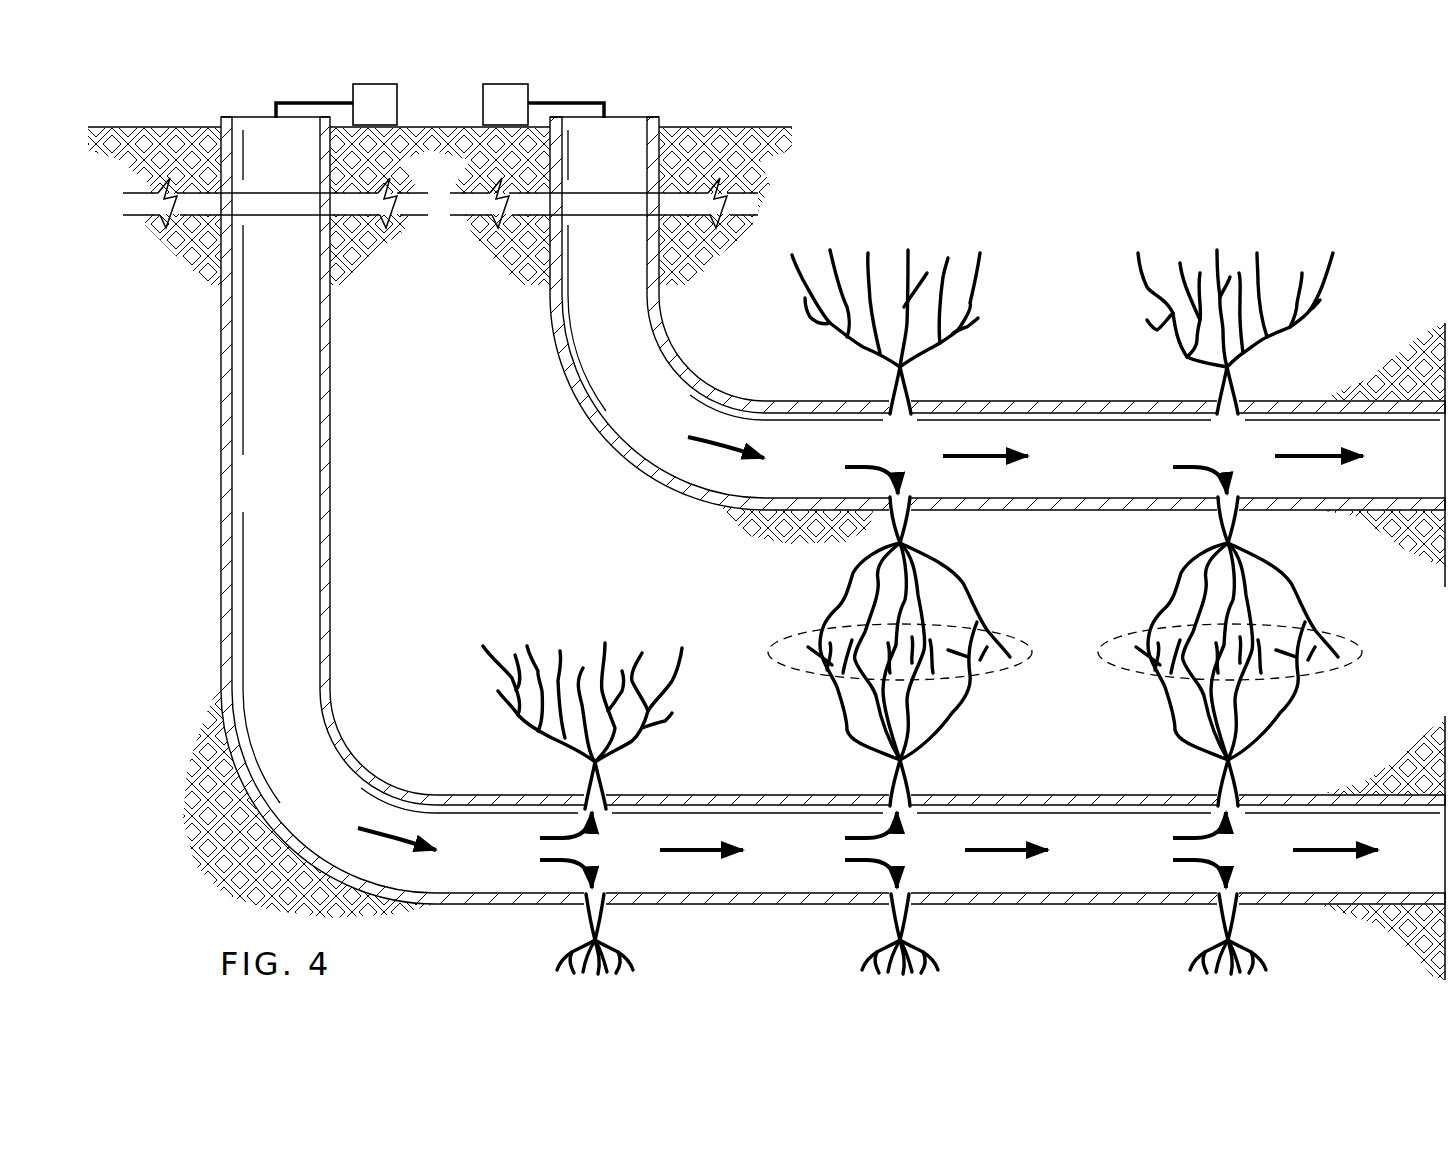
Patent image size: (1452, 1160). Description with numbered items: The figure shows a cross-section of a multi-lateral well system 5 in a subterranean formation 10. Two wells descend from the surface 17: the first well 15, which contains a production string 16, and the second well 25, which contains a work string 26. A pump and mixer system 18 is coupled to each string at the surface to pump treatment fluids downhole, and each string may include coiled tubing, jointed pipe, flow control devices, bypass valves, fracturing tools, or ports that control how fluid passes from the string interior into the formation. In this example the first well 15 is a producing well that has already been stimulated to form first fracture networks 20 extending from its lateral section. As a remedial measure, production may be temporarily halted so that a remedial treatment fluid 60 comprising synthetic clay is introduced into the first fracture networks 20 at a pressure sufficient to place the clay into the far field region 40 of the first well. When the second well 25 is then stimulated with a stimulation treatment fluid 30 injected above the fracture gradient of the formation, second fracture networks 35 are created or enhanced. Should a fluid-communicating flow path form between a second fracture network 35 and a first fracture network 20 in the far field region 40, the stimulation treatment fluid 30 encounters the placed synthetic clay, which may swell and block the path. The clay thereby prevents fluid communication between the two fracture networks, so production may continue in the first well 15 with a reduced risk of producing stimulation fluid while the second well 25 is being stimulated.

The multi-lateral well system 5 is at (1098, 157).
The subterranean formation 10 is at (457, 279).
The first well 15 is at (683, 497).
The production string 16 is at (586, 409).
The surface 17 is at (147, 127).
The pump and mixer system 18 is at (358, 92).
The first fracture networks 20 is at (1015, 278).
The second well 25 is at (222, 592).
The work string 26 is at (236, 498).
The stimulation treatment fluid 30 is at (366, 828).
The second fracture networks 35 is at (662, 745).
The far field region 40 is at (768, 654).
The remedial treatment fluid 60 is at (700, 436).